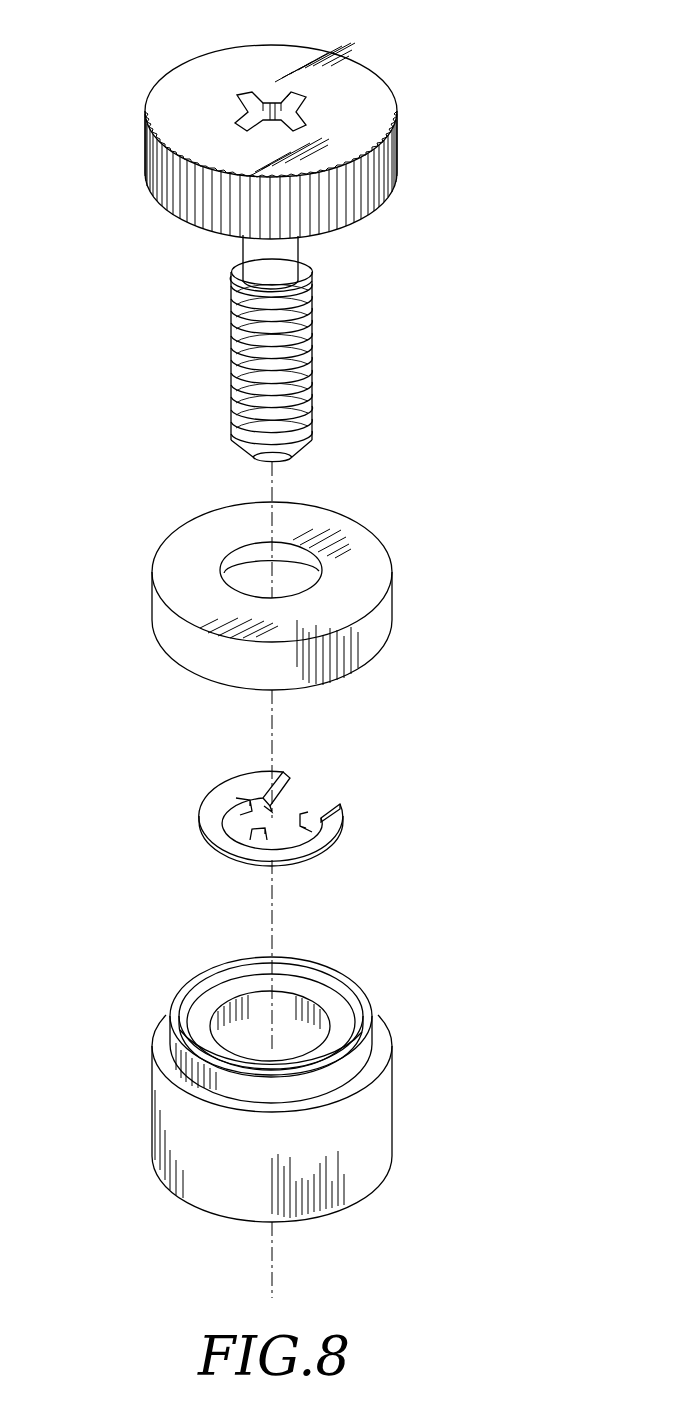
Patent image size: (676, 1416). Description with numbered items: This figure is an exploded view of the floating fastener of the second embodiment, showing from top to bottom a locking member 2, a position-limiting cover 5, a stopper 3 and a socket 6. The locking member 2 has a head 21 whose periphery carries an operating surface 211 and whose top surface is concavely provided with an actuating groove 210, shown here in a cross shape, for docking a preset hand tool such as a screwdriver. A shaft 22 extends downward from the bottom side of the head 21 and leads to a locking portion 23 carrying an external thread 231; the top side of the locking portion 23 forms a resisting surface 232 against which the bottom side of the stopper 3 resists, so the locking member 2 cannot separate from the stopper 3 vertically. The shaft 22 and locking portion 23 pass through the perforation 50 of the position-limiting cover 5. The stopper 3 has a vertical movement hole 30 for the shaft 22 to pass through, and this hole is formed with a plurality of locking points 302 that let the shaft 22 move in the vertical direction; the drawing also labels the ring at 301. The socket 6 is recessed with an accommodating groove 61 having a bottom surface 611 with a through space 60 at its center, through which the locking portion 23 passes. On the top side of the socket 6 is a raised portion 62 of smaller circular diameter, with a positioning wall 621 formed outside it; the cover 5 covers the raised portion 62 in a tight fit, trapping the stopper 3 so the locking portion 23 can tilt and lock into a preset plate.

The locking member 2 is at (132, 183).
The head 21 is at (183, 117).
The actuating groove 210 is at (260, 118).
The operating surface 211 is at (382, 168).
The shaft 22 is at (253, 247).
The locking portion 23 is at (397, 378).
The external thread 231 is at (293, 397).
The resisting surface 232 is at (298, 287).
The position-limiting cover 5 is at (402, 593).
The perforation 50 is at (243, 577).
The stopper 3 is at (192, 812).
The vertical movement hole 30 is at (263, 818).
The cut end 301 is at (297, 800).
The locking points 302 is at (247, 797).
The socket 6 is at (410, 1095).
The through space 60 is at (303, 1033).
The accommodating groove 61 is at (202, 1017).
The bottom surface 611 is at (238, 987).
The raised portion 62 is at (463, 1020).
The positioning wall 621 is at (357, 1057).